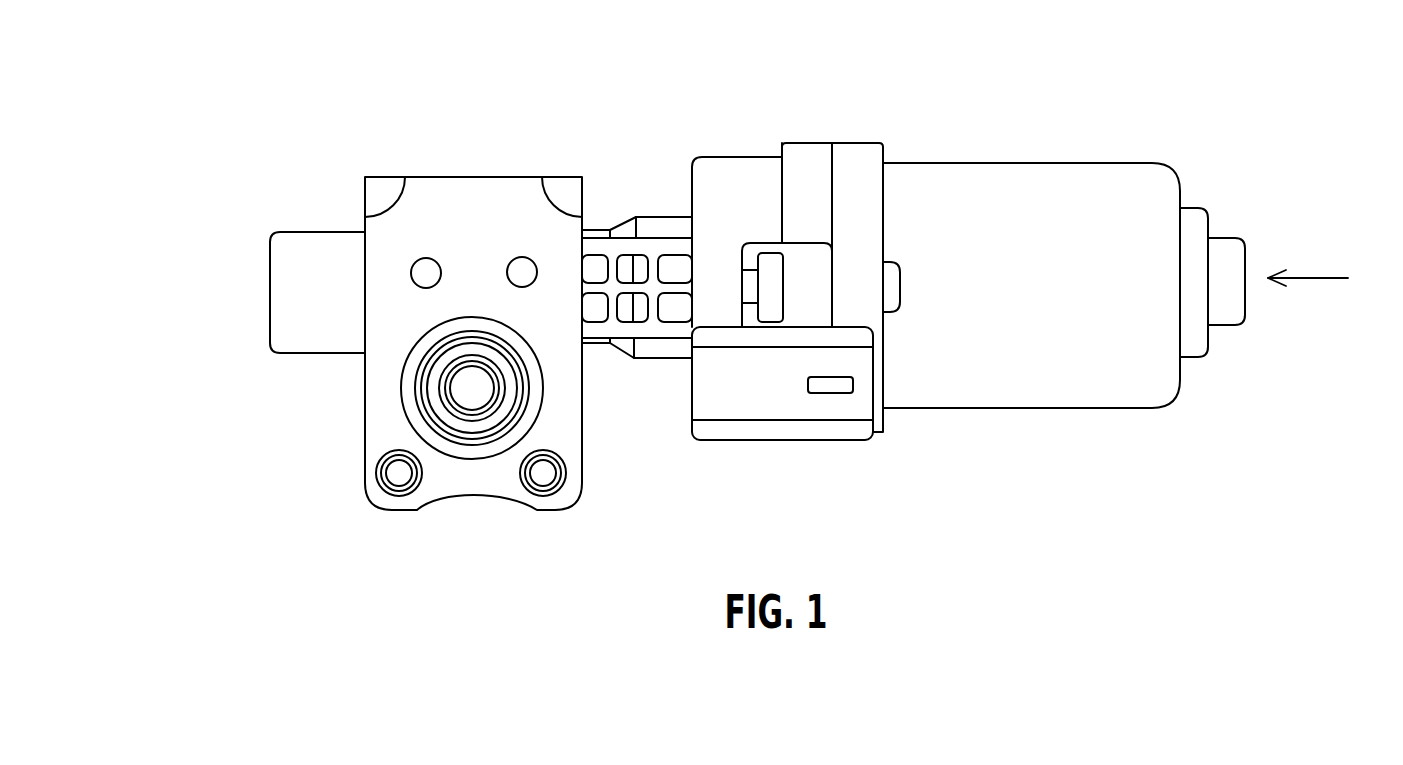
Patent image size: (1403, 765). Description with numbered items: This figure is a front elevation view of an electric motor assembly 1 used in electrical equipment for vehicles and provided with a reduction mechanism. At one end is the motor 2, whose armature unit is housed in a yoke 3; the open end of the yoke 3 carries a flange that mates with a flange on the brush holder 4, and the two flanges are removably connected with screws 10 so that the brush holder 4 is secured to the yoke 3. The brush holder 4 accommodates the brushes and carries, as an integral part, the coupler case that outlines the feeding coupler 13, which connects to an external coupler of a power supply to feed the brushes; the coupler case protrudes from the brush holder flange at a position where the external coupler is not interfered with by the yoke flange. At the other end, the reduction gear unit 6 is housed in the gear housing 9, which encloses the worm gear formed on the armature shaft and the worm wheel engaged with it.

The electric motor assembly 1 is at (688, 112).
The motor 2 is at (998, 416).
The yoke 3 is at (1022, 175).
The brush holder 4 is at (738, 167).
The reduction gear unit 6 is at (486, 174).
The gear housing 9 is at (375, 425).
The screws 10 is at (893, 292).
The feeding coupler 13 is at (762, 403).